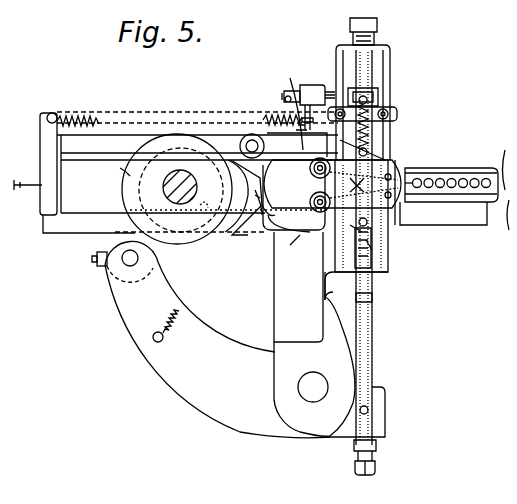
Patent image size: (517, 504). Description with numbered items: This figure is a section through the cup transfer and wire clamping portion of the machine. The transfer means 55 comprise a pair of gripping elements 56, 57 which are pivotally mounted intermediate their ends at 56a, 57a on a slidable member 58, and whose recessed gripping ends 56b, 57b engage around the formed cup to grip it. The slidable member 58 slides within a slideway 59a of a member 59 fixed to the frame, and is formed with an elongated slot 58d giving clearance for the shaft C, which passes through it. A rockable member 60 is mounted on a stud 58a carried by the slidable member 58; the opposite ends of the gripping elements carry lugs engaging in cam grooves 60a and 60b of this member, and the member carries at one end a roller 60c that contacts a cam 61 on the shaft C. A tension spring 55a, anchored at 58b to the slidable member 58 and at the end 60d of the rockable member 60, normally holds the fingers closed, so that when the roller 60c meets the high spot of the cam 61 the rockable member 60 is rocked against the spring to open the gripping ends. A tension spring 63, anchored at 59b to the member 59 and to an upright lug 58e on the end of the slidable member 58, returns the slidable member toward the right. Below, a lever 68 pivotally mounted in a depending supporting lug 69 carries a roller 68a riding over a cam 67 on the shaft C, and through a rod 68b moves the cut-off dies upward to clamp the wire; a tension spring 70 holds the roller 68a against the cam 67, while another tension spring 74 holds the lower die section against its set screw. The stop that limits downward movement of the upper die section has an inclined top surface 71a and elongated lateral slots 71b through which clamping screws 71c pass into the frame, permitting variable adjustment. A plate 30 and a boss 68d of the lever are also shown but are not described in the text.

The plate 30 is at (446, 198).
The transfer means 55 is at (365, 195).
The tension spring 55a is at (275, 215).
The gripping element 56 is at (355, 165).
The pivot of gripping element 56a is at (372, 145).
The gripping end 56b is at (420, 170).
The gripping element 57 is at (360, 230).
The pivot of gripping element 57a is at (368, 245).
The gripping end 57b is at (380, 185).
The slidable member 58 is at (176, 172).
The stud 58a is at (195, 307).
The spring anchor 58b is at (356, 230).
The elongated slot 58d is at (196, 208).
The upright lug 58e is at (46, 116).
The member 59 is at (90, 230).
The slideway 59a is at (85, 215).
The spring anchor 59b is at (290, 78).
The rockable member 60 is at (278, 141).
The cam groove 60a is at (262, 117).
The cam groove 60b is at (306, 88).
The roller 60c is at (300, 118).
The end of rockable member 60d is at (310, 195).
The cam 61 is at (200, 252).
The tension spring 63 is at (66, 118).
The cam 67 is at (120, 169).
The lever 68 is at (217, 339).
The roller 68a is at (105, 268).
The rod 68b is at (372, 378).
The arm boss 68d is at (310, 376).
The depending supporting lug 69 is at (298, 287).
The tension spring 70 is at (172, 328).
The inclined top surface 71a is at (366, 108).
The elongated lateral slot 71b is at (385, 110).
The clamping screw 71c is at (342, 110).
The tension spring 74 is at (370, 340).
The shaft C is at (198, 184).